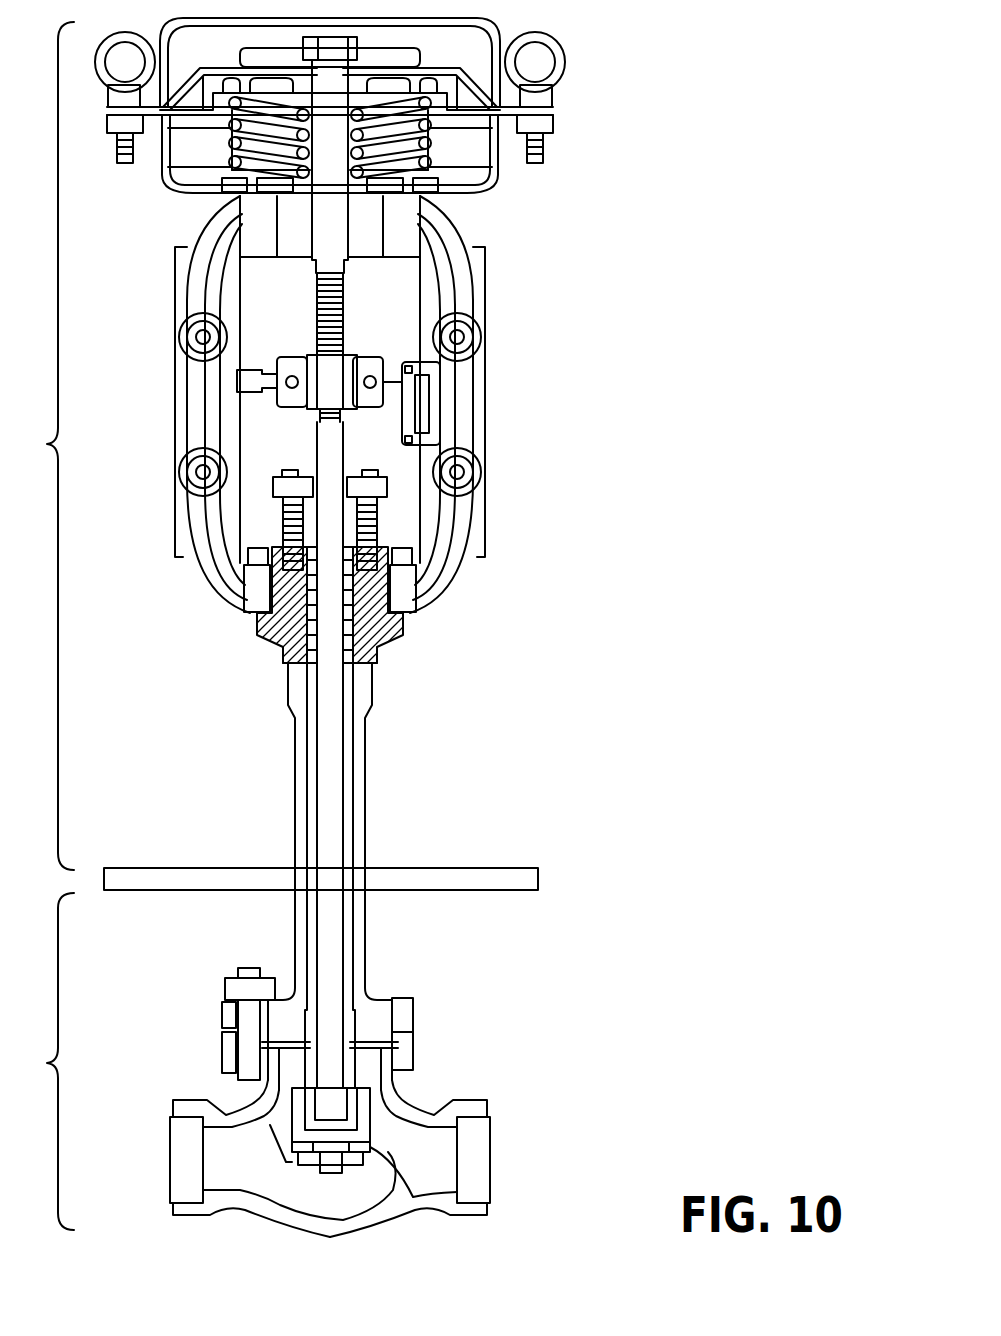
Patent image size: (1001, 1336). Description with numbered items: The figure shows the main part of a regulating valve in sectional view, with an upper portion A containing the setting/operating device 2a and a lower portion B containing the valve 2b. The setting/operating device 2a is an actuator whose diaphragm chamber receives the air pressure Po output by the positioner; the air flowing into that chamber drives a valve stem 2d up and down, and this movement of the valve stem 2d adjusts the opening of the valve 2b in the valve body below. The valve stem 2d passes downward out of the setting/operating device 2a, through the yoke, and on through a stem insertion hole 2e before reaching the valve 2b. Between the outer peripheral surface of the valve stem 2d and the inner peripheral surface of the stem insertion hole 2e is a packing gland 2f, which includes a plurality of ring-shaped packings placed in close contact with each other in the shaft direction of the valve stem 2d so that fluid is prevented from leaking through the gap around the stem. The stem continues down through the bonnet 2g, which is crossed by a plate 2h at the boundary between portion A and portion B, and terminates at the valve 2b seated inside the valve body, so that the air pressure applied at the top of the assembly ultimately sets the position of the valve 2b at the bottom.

The setting/operating device 2a is at (503, 178).
The valve 2b is at (375, 1140).
The valve stem 2d is at (350, 460).
The stem insertion hole 2e is at (285, 640).
The packing gland 2f is at (355, 612).
The bonnet 2g is at (363, 837).
The mounting plate 2h is at (538, 878).
The actuator section A is at (49, 446).
The valve section B is at (49, 1061).